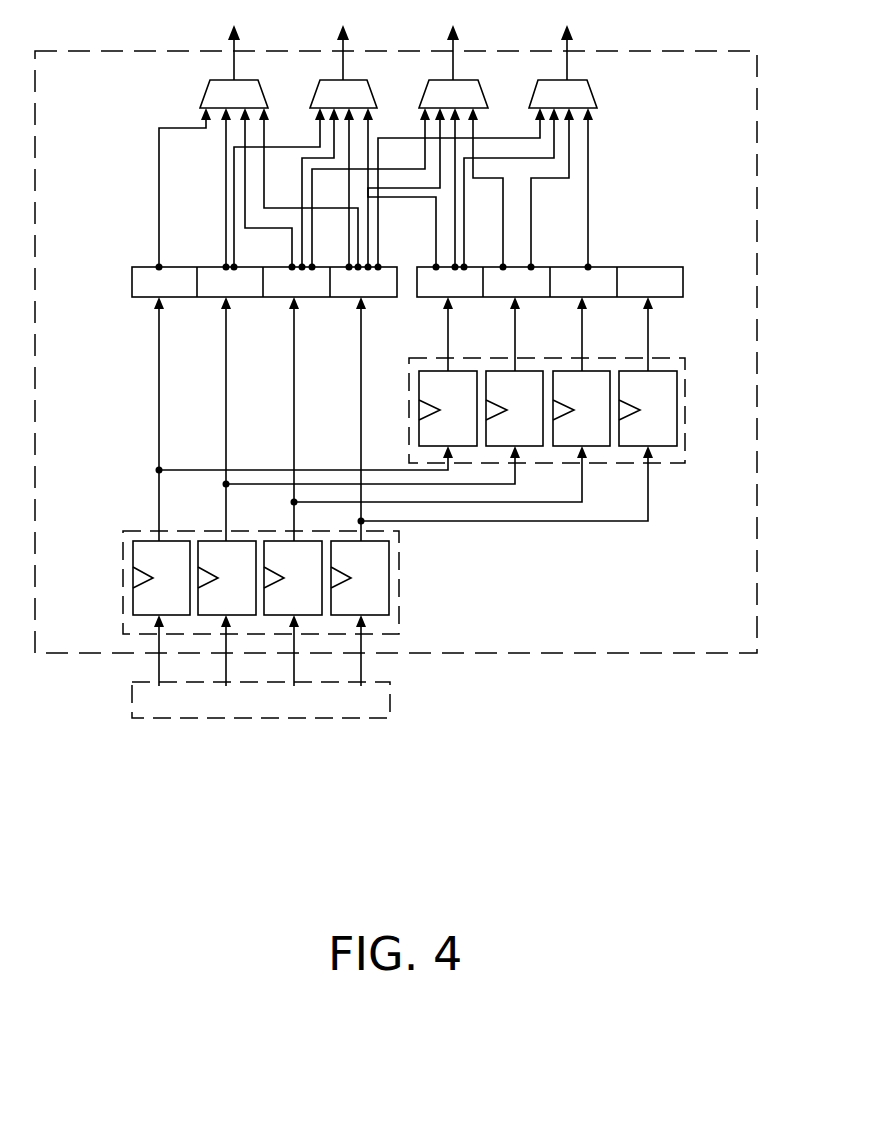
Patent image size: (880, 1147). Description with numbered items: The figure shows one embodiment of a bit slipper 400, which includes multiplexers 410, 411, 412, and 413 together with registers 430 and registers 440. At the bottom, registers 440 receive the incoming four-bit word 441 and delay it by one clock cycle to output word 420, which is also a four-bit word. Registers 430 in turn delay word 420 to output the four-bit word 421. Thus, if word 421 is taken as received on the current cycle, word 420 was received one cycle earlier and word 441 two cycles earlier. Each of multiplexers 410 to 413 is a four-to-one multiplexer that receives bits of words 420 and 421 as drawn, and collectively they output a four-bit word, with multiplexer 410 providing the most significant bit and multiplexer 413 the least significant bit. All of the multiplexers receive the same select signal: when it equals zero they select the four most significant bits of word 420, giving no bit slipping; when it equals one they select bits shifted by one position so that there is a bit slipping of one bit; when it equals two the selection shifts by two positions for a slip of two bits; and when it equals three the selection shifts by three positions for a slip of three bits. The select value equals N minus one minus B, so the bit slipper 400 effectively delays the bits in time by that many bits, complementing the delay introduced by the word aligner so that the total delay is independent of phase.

The bit slipper 400 is at (757, 437).
The multiplexer 410 is at (216, 106).
The multiplexer 411 is at (325, 106).
The multiplexer 412 is at (435, 106).
The multiplexer 413 is at (545, 106).
The word 420 is at (132, 287).
The word 421 is at (683, 279).
The registers 430 is at (686, 400).
The registers 440 is at (123, 583).
The word 441 is at (390, 688).